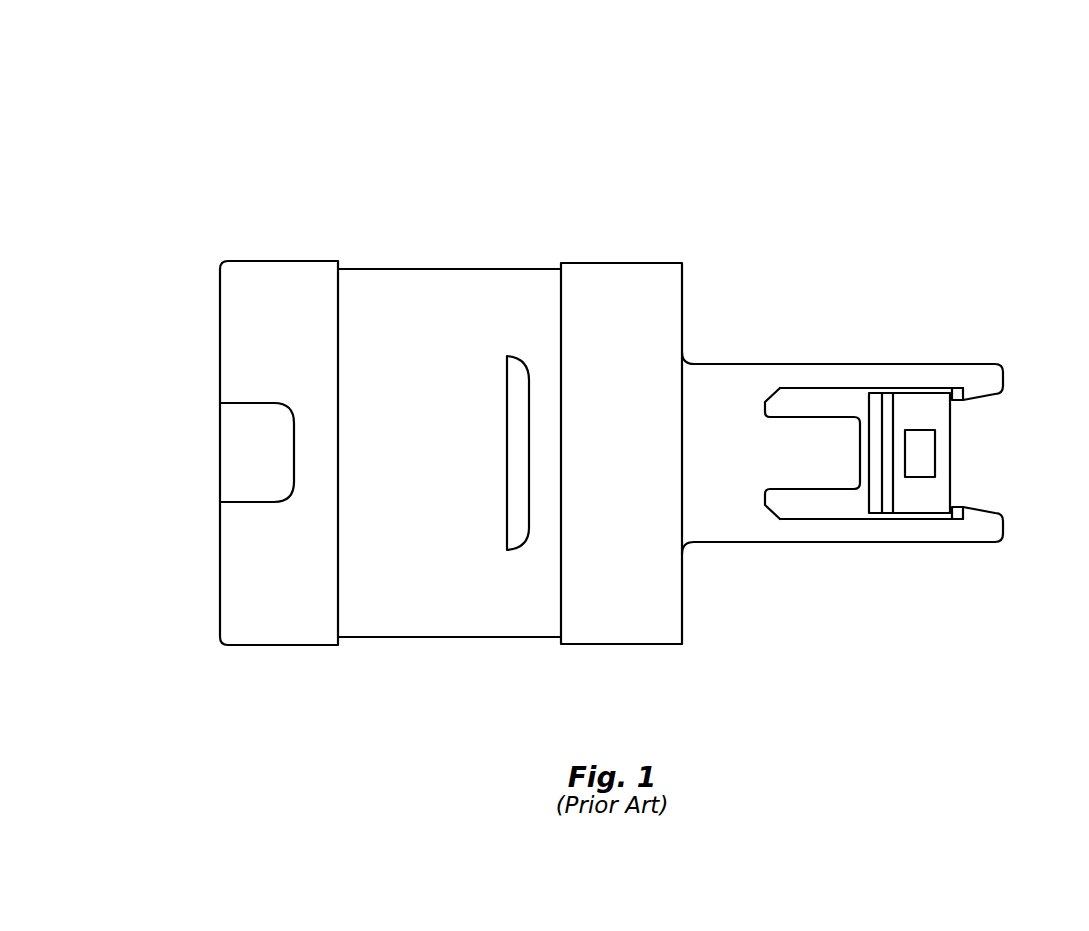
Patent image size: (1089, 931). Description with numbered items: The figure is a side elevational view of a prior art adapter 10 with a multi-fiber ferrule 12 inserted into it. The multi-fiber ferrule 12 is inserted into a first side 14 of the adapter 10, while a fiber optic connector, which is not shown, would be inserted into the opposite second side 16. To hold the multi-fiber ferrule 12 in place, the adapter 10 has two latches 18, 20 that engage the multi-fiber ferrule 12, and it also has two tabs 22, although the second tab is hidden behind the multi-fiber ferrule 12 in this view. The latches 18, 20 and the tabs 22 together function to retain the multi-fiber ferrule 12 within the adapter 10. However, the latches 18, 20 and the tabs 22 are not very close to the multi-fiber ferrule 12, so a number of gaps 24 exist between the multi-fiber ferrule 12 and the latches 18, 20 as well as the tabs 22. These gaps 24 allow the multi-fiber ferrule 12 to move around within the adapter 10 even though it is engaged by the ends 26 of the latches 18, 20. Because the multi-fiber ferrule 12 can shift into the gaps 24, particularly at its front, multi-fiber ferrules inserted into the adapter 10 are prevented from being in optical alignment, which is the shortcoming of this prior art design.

The prior art adapter 10 is at (583, 388).
The multi-fiber ferrule 12 is at (945, 465).
The first side 14 is at (815, 560).
The second side 16 is at (175, 655).
The latch 18 is at (906, 364).
The latch 20 is at (938, 545).
The tab 22 is at (779, 464).
The gaps 24 is at (815, 395).
The ends of the latches 26 is at (957, 401).